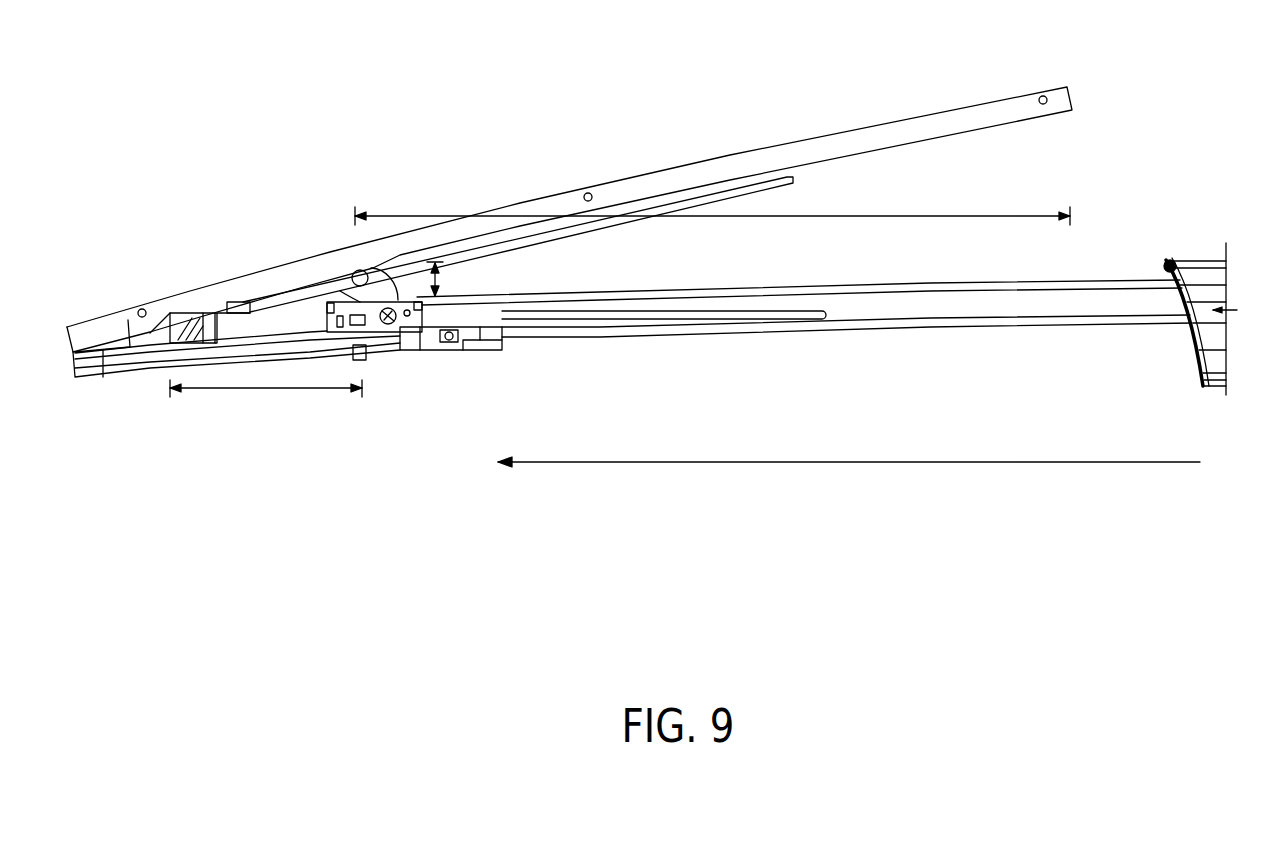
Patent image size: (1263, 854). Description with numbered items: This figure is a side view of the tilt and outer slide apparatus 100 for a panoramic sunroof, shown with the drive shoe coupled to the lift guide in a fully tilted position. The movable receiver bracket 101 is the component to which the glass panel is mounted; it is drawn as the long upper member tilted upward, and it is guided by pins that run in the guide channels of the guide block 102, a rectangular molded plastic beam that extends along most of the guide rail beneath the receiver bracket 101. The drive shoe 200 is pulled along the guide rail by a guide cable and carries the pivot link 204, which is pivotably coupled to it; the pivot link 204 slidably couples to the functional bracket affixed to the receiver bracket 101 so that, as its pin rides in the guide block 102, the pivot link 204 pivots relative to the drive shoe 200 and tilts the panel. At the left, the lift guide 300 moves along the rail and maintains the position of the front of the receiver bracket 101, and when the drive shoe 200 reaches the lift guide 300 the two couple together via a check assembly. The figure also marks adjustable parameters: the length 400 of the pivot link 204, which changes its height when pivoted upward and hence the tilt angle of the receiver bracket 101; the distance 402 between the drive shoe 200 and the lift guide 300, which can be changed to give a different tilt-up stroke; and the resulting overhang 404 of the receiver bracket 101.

The tilt and outer slide apparatus 100 is at (176, 129).
The movable receiver bracket 101 is at (710, 157).
The guide block 102 is at (890, 331).
The drive shoe 200 is at (420, 350).
The pivot link 204 is at (360, 297).
The lift guide 300 is at (160, 368).
The length of the pivot link 400 is at (440, 278).
The distance between the drive shoe and the lift guide 402 is at (273, 391).
The overhang of the receiver bracket 404 is at (707, 218).